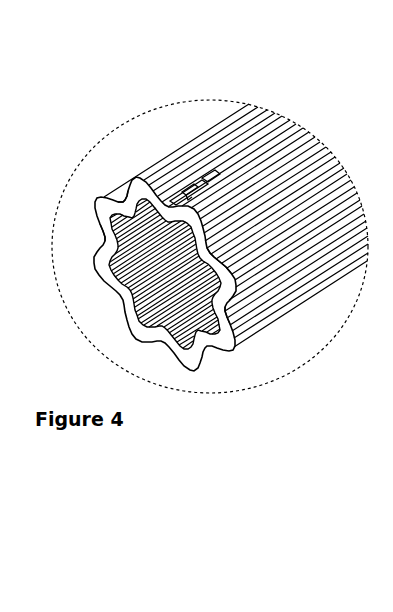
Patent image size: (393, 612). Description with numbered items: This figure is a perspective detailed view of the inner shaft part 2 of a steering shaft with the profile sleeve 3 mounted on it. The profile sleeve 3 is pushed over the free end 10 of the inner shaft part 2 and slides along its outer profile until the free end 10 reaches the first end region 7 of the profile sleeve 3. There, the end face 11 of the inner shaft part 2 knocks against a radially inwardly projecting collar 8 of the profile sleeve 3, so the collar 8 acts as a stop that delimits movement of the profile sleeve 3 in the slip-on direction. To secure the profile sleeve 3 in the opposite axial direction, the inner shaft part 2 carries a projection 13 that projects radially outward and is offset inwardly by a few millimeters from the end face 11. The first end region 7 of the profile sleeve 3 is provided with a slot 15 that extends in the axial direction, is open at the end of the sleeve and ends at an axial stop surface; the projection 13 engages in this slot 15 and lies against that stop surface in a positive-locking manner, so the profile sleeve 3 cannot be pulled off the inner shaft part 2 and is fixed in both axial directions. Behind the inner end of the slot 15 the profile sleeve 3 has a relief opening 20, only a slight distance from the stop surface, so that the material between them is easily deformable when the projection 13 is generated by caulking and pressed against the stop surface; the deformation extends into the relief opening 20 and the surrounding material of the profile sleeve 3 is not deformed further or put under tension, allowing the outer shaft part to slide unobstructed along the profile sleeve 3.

The inner shaft part 2 is at (172, 283).
The profile sleeve 3 is at (324, 190).
The first end region 7 is at (254, 314).
The collar 8 is at (102, 232).
The free end 10 is at (164, 192).
The end face 11 is at (120, 189).
The projection 13 is at (188, 188).
The slot 15 is at (232, 233).
The relief opening 20 is at (215, 154).